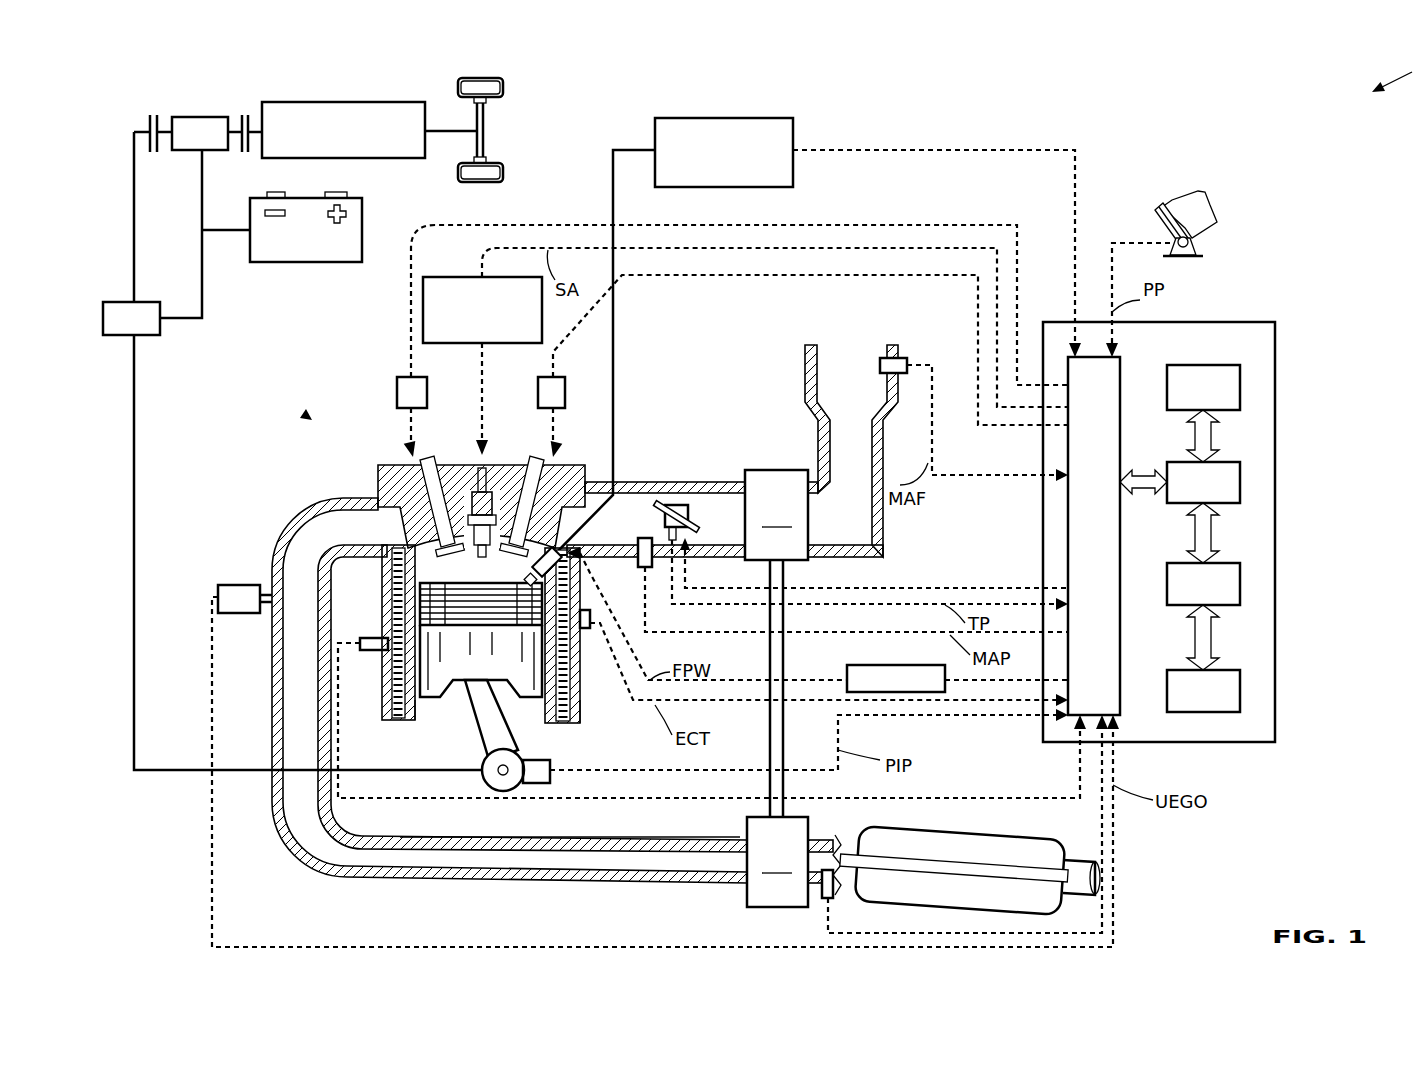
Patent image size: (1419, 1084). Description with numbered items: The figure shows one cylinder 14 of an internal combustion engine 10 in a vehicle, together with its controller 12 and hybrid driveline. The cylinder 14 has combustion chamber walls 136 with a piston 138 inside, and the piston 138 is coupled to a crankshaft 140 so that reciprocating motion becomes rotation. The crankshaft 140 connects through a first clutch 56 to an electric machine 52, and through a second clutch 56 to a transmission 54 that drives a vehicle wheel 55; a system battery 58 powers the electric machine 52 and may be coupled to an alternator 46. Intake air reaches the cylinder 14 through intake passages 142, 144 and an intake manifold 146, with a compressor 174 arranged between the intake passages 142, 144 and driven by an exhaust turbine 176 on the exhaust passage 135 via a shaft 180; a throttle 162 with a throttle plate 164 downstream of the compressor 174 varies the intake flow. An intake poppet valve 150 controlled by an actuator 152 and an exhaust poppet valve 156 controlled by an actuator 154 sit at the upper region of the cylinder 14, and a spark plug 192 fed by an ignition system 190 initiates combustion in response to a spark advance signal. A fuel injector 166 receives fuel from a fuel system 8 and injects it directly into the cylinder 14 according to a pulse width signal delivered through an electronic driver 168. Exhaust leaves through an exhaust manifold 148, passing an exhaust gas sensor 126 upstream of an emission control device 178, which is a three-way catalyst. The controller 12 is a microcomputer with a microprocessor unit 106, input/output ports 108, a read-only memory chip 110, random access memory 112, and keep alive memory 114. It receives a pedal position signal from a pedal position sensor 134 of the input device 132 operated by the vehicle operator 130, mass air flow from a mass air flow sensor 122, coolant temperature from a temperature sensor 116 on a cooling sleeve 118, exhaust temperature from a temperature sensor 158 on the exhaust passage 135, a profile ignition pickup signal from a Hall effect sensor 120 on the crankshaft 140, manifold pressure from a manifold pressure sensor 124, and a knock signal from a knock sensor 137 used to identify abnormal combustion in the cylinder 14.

The fuel system 8 is at (760, 118).
The internal combustion engine 10 is at (305, 416).
The controller 12 is at (1275, 330).
The cylinder 14 is at (380, 590).
The alternator 46 is at (103, 330).
The electric machine 52 is at (185, 117).
The transmission 54 is at (413, 158).
The vehicle wheel 55 is at (458, 85).
The clutch 56 is at (150, 120).
The system battery 58 is at (300, 262).
The microprocessor unit 106 is at (1240, 480).
The input/output ports 108 is at (1122, 372).
The read-only memory chip 110 is at (1240, 388).
The random access memory 112 is at (1240, 590).
The keep alive memory 114 is at (1240, 697).
The temperature sensor 116 is at (590, 630).
The cooling sleeve 118 is at (583, 705).
The Hall effect sensor 120 is at (542, 783).
The mass air flow sensor 122 is at (895, 358).
The MAP sensor 124 is at (648, 570).
The exhaust gas sensor 126 is at (218, 592).
The vehicle operator 130 is at (1215, 210).
The input device 132 is at (1165, 215).
The pedal position sensor 134 is at (1193, 244).
The exhaust passage 135 is at (678, 830).
The combustion chamber walls 136 is at (423, 705).
The knock sensor 137 is at (364, 650).
The piston 138 is at (463, 668).
The crankshaft 140 is at (482, 775).
The intake passage 142 is at (872, 392).
The intake passage 144 is at (742, 531).
The intake manifold 146 is at (654, 531).
The exhaust manifold 148 is at (368, 539).
The intake poppet valve 150 is at (514, 540).
The actuator 152 is at (538, 395).
The actuator 154 is at (397, 390).
The exhaust poppet valve 156 is at (442, 545).
The temperature sensor 158 is at (826, 900).
The throttle 162 is at (686, 504).
The throttle plate 164 is at (668, 503).
The fuel injector 166 is at (548, 553).
The electronic driver 168 is at (847, 672).
The compressor 174 is at (776, 515).
The exhaust turbine 176 is at (794, 862).
The emission control device 178 is at (1020, 843).
The shaft 180 is at (783, 740).
The ignition system 190 is at (433, 277).
The spark plug 192 is at (478, 480).